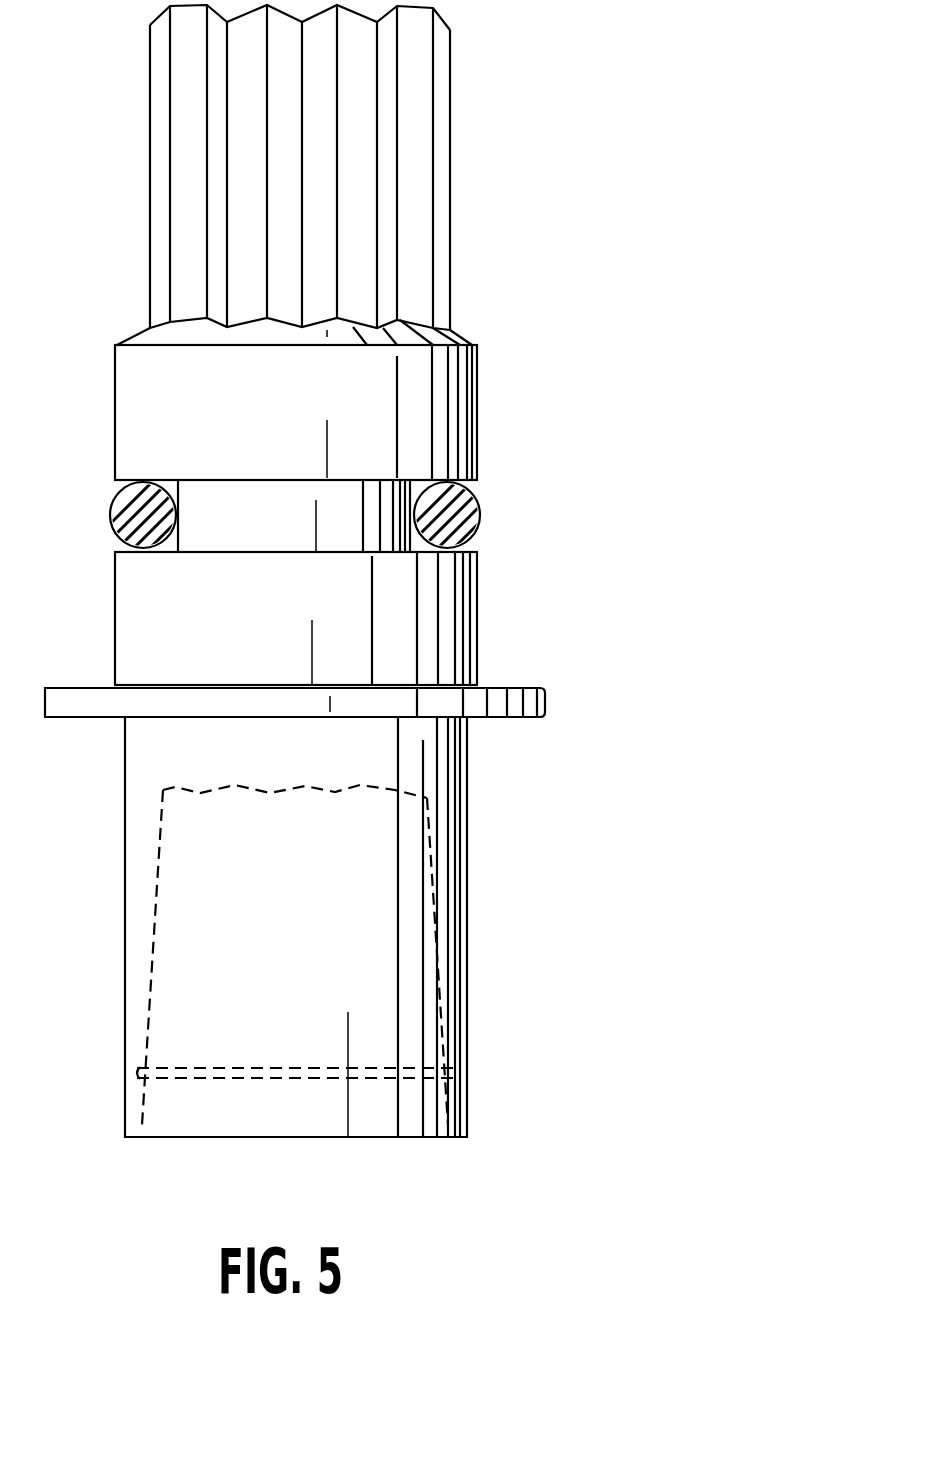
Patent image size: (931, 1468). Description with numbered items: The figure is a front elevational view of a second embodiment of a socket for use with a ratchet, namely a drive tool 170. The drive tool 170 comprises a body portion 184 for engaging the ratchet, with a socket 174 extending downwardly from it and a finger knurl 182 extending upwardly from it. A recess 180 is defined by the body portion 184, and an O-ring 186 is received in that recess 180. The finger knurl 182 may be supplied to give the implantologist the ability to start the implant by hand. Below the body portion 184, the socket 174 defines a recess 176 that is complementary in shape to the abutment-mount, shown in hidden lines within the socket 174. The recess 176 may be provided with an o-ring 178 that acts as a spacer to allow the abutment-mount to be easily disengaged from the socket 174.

The drive tool 170 is at (480, 578).
The socket 174 is at (465, 933).
The recess 176 is at (395, 1107).
The o-ring 178 is at (472, 1063).
The recess 180 is at (168, 478).
The finger knurl 182 is at (453, 193).
The body portion 184 is at (475, 400).
The O-ring 186 is at (480, 493).